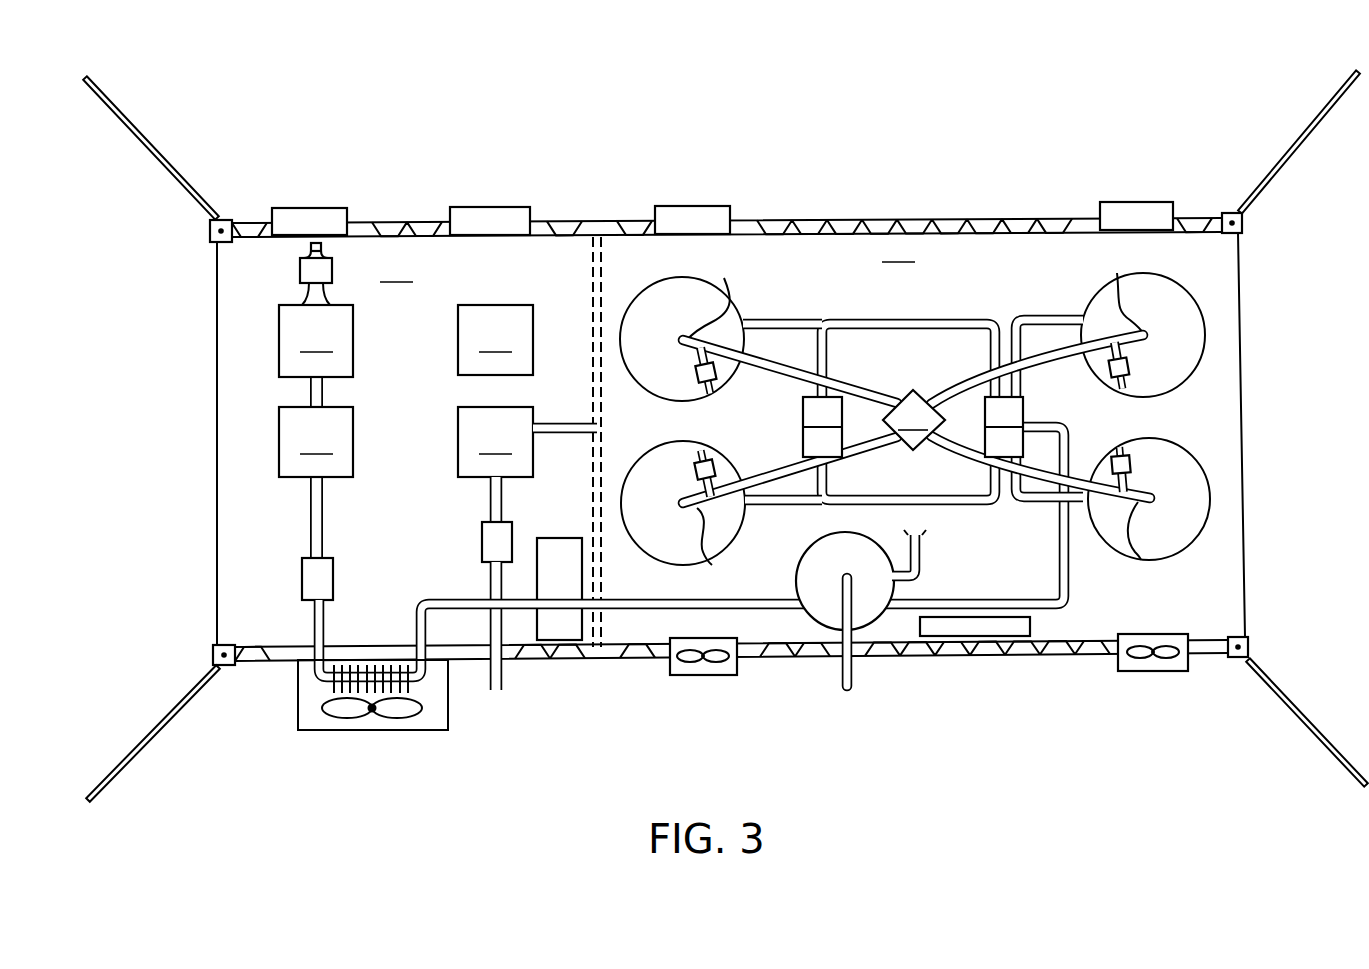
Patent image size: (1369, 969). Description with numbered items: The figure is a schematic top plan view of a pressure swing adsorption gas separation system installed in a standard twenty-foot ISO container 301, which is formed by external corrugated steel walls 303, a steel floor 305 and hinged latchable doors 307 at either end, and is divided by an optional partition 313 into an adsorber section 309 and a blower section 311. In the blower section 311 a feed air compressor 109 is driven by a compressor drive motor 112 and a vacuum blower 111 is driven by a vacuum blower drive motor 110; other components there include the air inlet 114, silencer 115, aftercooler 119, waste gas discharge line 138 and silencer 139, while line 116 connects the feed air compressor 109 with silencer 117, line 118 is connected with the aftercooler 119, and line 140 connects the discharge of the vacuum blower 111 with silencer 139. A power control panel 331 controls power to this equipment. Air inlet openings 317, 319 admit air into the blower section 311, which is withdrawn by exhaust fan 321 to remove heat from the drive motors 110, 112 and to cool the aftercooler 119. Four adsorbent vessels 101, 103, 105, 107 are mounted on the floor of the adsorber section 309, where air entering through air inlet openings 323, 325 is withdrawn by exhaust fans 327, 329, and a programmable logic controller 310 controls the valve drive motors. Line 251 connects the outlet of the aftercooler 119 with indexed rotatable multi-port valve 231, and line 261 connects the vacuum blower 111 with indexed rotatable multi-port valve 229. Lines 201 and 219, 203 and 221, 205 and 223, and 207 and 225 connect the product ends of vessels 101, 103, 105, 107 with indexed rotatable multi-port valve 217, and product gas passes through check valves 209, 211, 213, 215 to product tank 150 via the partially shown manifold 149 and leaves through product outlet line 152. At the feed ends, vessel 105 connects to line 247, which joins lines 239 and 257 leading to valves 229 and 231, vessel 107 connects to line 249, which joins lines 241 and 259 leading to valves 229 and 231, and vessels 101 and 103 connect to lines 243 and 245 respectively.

The adsorbent vessel 101 is at (663, 283).
The adsorbent vessel 103 is at (672, 563).
The adsorbent vessel 105 is at (1168, 282).
The adsorbent vessel 107 is at (1168, 560).
The feed air compressor 109 is at (316, 341).
The vacuum blower drive motor 110 is at (495, 340).
The vacuum blower 111 is at (495, 442).
The compressor drive motor 112 is at (316, 442).
The air inlet 114 is at (306, 250).
The silencer 115 is at (300, 272).
The line 116 is at (323, 388).
The silencer 117 is at (302, 578).
The line 118 is at (313, 623).
The aftercooler 119 is at (368, 666).
The waste gas discharge line 138 is at (505, 685).
The silencer 139 is at (482, 545).
The line 140 is at (490, 506).
The manifold 149 is at (922, 556).
The product tank 150 is at (818, 628).
The product outlet line 152 is at (843, 685).
The line 201 is at (717, 283).
The line 203 is at (710, 563).
The line 205 is at (1118, 282).
The line 207 is at (1143, 560).
The check valve 209 is at (696, 377).
The check valve 211 is at (688, 457).
The check valve 213 is at (1172, 383).
The check valve 215 is at (1172, 452).
The indexed rotatable multi-port valve 217 is at (914, 420).
The line 219 is at (812, 342).
The line 221 is at (787, 477).
The line 223 is at (970, 372).
The line 225 is at (960, 465).
The indexed rotatable multi-port valve 229 is at (803, 410).
The indexed rotatable multi-port valve 231 is at (1027, 408).
The line 239 is at (908, 318).
The line 241 is at (905, 505).
The line 243 is at (770, 318).
The line 245 is at (763, 510).
The line 247 is at (1053, 315).
The line 249 is at (1047, 507).
The line 251 is at (455, 602).
The line 257 is at (1018, 383).
The line 259 is at (990, 503).
The line 261 is at (565, 422).
The container 301 is at (858, 142).
The external corrugated steel walls 303 is at (950, 215).
The steel floor 305 is at (833, 243).
The hinged latchable doors 307 is at (170, 177).
The adsorber section 309 is at (899, 250).
The programmable logic controller 310 is at (1030, 640).
The blower section 311 is at (397, 270).
The partition 313 is at (590, 282).
The air inlet opening 317 is at (308, 208).
The air inlet opening 319 is at (470, 207).
The exhaust fan 321 is at (370, 732).
The air inlet opening 323 is at (1138, 202).
The air inlet opening 325 is at (706, 206).
The exhaust fan 327 is at (707, 677).
The exhaust fan 329 is at (1150, 672).
The power control panel 331 is at (558, 538).